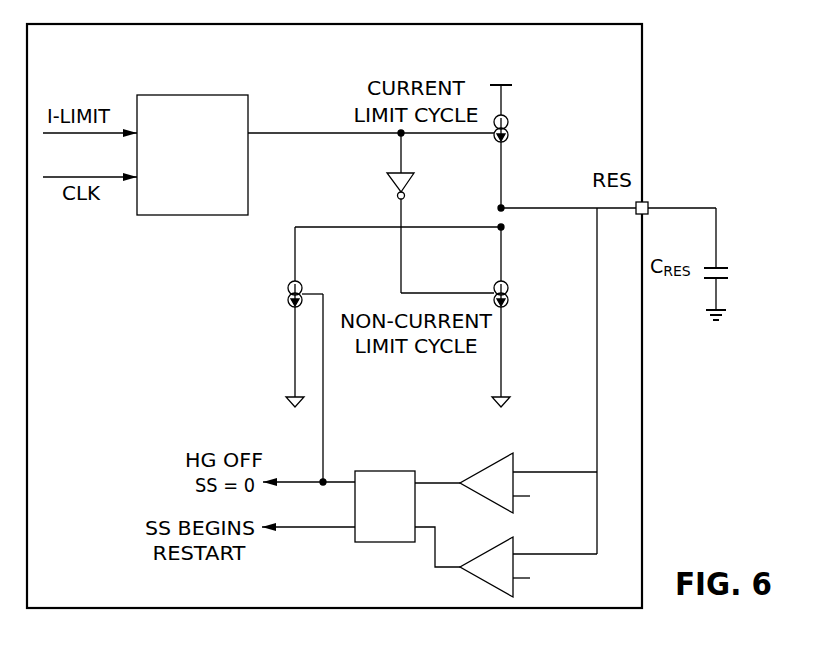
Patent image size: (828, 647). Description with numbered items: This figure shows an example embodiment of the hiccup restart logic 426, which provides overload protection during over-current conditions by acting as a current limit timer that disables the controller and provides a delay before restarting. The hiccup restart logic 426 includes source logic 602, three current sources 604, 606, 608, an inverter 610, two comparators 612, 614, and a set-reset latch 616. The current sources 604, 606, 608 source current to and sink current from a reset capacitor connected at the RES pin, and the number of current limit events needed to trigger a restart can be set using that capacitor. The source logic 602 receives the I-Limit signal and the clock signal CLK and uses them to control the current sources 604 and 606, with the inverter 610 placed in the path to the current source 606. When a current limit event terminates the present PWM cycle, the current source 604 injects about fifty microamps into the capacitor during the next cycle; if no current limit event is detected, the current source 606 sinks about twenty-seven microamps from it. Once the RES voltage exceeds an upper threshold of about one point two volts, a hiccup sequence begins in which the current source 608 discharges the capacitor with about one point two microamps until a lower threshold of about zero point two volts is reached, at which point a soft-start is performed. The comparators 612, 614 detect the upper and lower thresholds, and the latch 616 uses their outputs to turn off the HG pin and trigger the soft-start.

The hiccup restart logic 426 is at (597, 58).
The source logic 602 is at (220, 95).
The current source 604 is at (508, 117).
The current source 606 is at (507, 282).
The current source 608 is at (302, 283).
The inverter 610 is at (393, 176).
The comparator 612 is at (476, 475).
The comparator 614 is at (471, 572).
The set-reset latch 616 is at (378, 544).